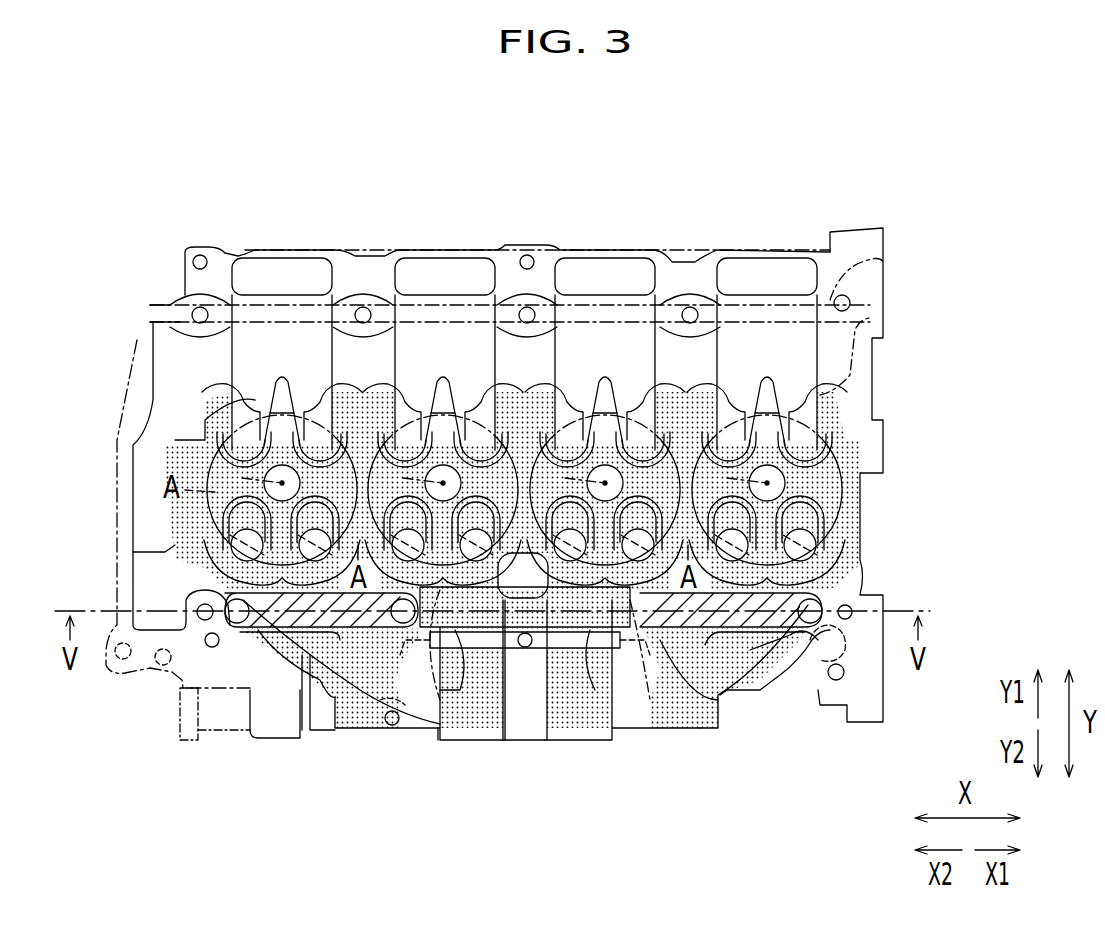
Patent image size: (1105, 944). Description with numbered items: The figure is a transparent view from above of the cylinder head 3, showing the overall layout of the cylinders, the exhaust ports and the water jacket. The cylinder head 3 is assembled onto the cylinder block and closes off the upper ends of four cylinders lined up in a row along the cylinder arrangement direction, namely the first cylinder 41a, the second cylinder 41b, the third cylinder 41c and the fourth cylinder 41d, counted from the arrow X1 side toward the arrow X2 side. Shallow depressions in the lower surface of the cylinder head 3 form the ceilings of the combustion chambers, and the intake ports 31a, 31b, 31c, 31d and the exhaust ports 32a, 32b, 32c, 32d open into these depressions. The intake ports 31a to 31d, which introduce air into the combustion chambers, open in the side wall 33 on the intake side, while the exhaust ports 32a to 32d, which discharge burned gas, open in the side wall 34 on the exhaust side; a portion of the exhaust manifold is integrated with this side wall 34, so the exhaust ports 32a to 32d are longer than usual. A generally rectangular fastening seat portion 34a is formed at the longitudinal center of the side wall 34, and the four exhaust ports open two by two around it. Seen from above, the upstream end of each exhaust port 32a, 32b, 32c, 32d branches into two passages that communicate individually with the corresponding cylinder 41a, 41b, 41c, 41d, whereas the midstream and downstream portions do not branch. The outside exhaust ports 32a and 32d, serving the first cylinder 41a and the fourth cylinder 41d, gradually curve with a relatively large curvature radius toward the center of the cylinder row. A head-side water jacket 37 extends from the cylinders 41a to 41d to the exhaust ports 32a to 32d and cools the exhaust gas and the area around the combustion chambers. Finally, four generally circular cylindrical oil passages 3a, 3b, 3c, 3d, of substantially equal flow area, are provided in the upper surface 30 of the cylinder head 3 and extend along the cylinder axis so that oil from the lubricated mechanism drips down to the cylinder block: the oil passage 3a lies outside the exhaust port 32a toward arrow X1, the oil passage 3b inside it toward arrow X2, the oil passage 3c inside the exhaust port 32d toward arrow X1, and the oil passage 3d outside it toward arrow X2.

The cylinder head 3 is at (312, 212).
The side wall on intake side 33 is at (527, 240).
The intake port 31a is at (725, 350).
The intake port 31b is at (560, 350).
The intake port 31c is at (440, 350).
The intake port 31d is at (234, 340).
The first cylinder 41a is at (835, 560).
The second cylinder 41b is at (700, 450).
The third cylinder 41c is at (352, 445).
The fourth cylinder 41d is at (205, 455).
The upper surface of the cylinder head 30 is at (838, 582).
The head-side water jacket 37 is at (752, 676).
The oil passage 3a is at (810, 672).
The oil passage 3b is at (650, 650).
The oil passage 3c is at (430, 650).
The oil passage 3d is at (245, 655).
The exhaust port 32a is at (718, 700).
The exhaust port 32b is at (600, 745).
The exhaust port 32c is at (460, 745).
The exhaust port 32d is at (333, 728).
The side wall on exhaust side 34 is at (270, 745).
The fastening seat portion 34a is at (518, 745).